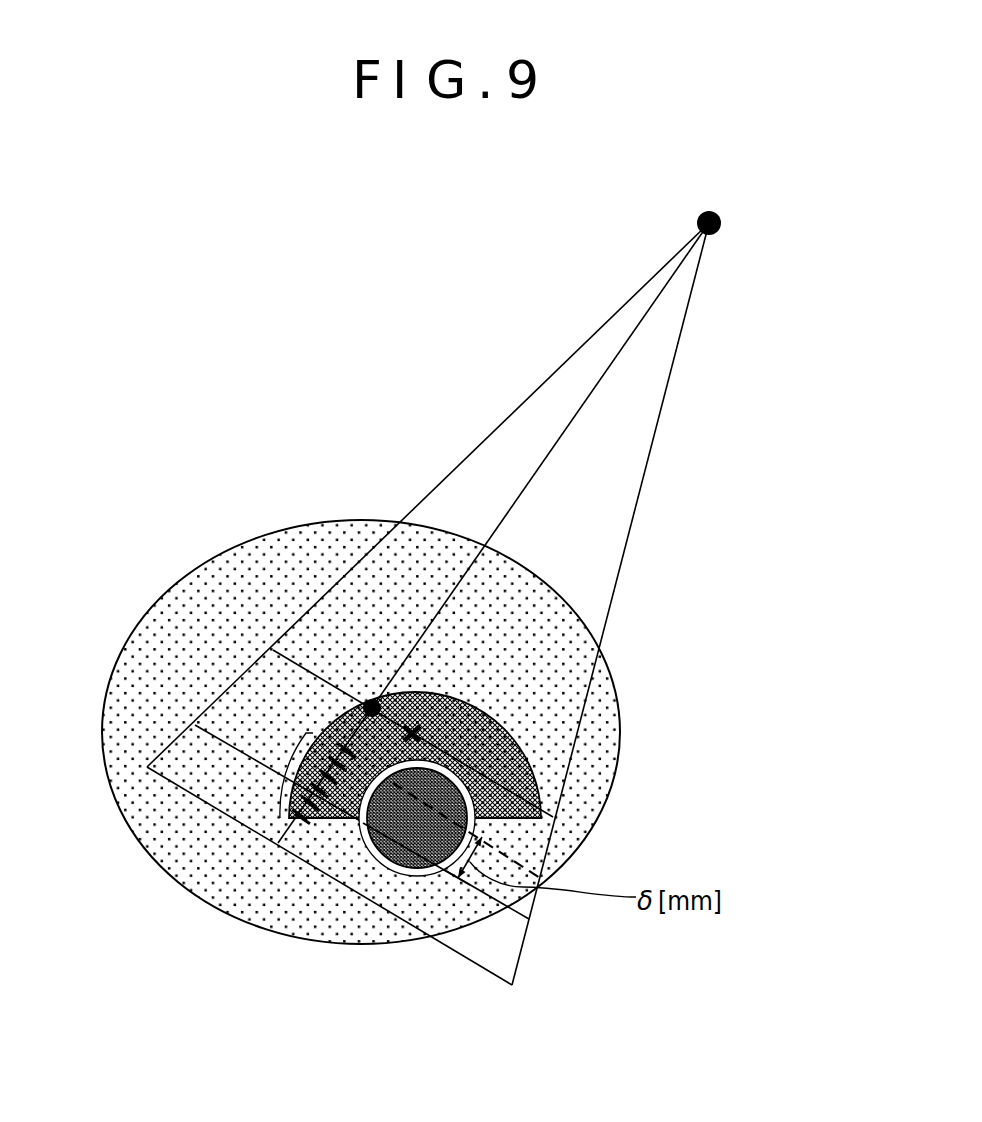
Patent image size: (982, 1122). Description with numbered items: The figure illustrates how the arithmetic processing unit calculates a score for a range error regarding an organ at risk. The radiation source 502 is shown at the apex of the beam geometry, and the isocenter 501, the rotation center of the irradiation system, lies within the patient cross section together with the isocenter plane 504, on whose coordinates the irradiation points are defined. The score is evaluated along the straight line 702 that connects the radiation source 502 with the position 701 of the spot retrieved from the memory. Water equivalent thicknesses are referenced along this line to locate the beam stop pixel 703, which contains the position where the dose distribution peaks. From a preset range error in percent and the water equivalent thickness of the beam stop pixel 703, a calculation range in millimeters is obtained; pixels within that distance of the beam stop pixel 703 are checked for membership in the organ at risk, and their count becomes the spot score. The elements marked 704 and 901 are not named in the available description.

The radiation source 502 is at (721, 214).
The isocenter 501 is at (440, 693).
The isocenter plane 504 is at (468, 788).
The position of the retrieved spot 701 is at (373, 700).
The straight line 702 is at (537, 470).
The beam stop pixel 703 is at (327, 822).
The projection line 704 is at (477, 891).
The virtual detector plane 901 is at (273, 773).